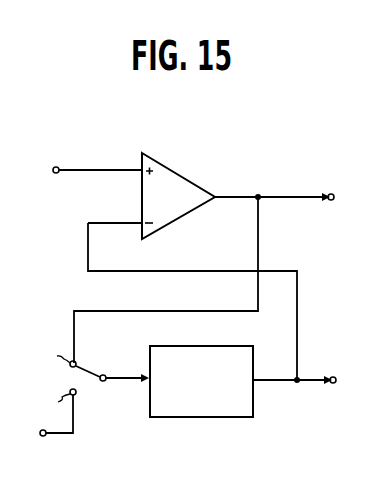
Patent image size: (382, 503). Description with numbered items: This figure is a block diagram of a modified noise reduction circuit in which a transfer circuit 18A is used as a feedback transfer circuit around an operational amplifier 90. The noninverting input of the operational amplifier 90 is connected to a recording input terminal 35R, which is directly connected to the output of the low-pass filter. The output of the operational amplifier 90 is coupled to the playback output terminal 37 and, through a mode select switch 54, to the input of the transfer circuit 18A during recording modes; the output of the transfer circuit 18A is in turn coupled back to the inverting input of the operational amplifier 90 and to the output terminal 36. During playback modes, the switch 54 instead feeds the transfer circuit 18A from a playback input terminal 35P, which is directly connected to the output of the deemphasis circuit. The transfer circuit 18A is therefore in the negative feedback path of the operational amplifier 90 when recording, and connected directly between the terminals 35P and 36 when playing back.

The recording input terminal 35R is at (58, 167).
The operational amplifier 90 is at (192, 179).
The playback output terminal 37 is at (331, 193).
The mode select switch 54 is at (86, 374).
The playback input terminal 35P is at (43, 436).
The transfer circuit 18A is at (254, 364).
The output terminal 36 is at (332, 377).